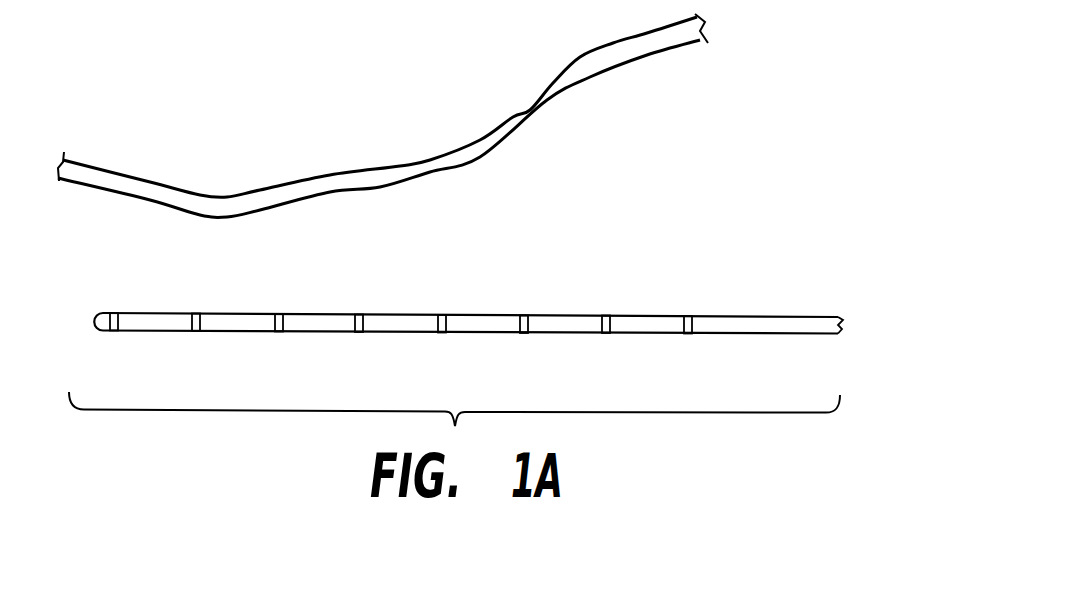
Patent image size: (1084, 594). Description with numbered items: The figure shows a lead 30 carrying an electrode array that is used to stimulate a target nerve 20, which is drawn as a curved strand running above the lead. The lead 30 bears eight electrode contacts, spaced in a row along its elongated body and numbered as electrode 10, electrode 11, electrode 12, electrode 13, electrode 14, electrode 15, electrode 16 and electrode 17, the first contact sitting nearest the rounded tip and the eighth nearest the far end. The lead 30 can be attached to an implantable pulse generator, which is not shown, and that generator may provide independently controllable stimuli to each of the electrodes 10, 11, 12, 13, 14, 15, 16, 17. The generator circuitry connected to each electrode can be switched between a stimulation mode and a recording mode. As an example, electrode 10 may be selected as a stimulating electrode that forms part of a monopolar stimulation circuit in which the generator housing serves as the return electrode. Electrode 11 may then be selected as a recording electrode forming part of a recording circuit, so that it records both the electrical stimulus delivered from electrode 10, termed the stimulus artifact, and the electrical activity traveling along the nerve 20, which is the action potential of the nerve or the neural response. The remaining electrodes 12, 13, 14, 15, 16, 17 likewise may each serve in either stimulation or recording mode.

The electrode E1 10 is at (113, 313).
The electrode E2 11 is at (196, 313).
The electrode E3 12 is at (280, 314).
The electrode E4 13 is at (360, 314).
The electrode E5 14 is at (443, 315).
The electrode E6 15 is at (525, 315).
The electrode E7 16 is at (606, 315).
The electrode E8 17 is at (689, 316).
The nerve 20 is at (333, 175).
The lead 30 is at (772, 316).